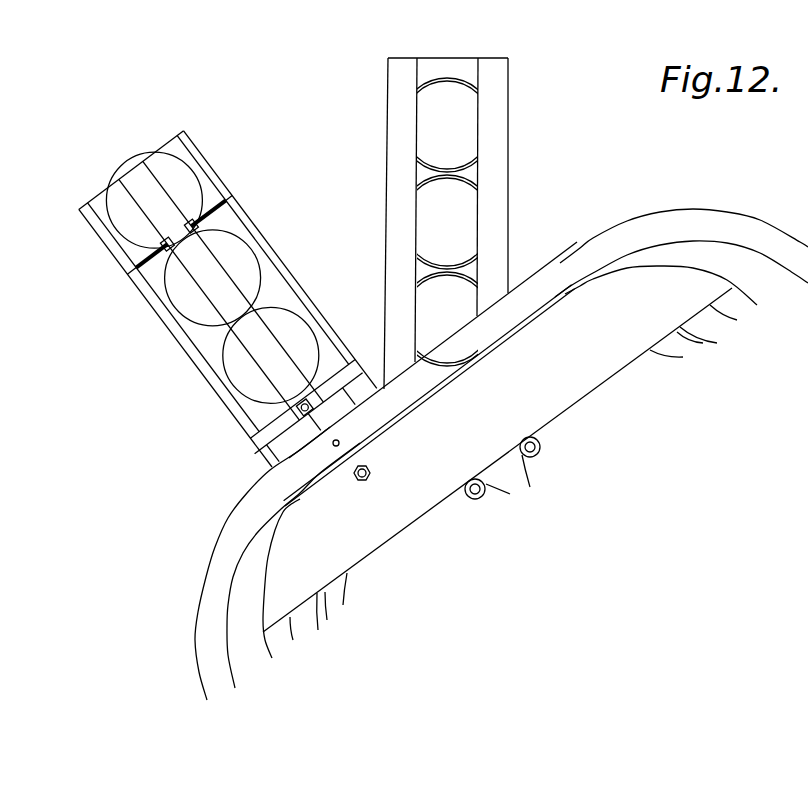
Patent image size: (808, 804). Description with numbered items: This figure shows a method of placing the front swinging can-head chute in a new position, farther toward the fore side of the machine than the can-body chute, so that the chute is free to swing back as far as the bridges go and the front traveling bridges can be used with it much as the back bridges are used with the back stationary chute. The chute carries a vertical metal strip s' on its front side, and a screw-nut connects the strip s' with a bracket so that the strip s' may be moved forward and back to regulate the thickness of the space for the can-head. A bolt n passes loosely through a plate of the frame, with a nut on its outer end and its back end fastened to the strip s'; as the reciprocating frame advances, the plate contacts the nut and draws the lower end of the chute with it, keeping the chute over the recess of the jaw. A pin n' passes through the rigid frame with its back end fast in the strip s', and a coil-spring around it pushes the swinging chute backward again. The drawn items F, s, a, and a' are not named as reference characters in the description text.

The curved track rail F is at (643, 236).
The ball tube s is at (460, 223).
The balls a is at (444, 222).
The vertical metal strip s' is at (228, 299).
The balls in inclined tube a' is at (212, 277).
The bolt n is at (369, 470).
The pin n' is at (346, 434).